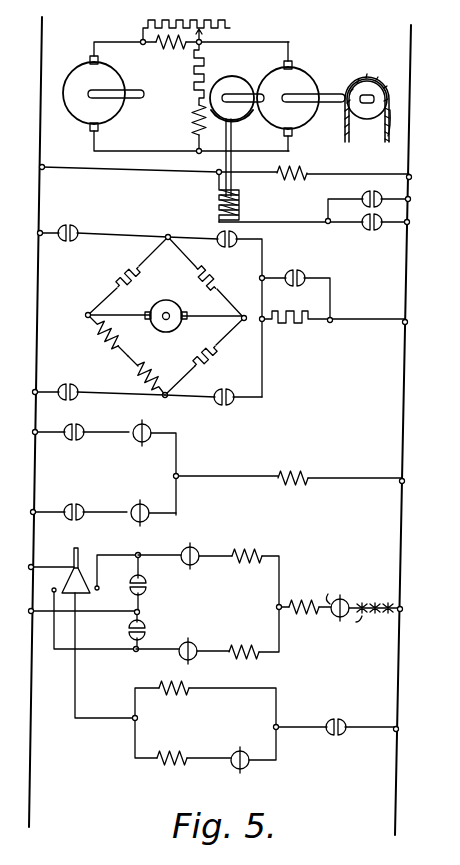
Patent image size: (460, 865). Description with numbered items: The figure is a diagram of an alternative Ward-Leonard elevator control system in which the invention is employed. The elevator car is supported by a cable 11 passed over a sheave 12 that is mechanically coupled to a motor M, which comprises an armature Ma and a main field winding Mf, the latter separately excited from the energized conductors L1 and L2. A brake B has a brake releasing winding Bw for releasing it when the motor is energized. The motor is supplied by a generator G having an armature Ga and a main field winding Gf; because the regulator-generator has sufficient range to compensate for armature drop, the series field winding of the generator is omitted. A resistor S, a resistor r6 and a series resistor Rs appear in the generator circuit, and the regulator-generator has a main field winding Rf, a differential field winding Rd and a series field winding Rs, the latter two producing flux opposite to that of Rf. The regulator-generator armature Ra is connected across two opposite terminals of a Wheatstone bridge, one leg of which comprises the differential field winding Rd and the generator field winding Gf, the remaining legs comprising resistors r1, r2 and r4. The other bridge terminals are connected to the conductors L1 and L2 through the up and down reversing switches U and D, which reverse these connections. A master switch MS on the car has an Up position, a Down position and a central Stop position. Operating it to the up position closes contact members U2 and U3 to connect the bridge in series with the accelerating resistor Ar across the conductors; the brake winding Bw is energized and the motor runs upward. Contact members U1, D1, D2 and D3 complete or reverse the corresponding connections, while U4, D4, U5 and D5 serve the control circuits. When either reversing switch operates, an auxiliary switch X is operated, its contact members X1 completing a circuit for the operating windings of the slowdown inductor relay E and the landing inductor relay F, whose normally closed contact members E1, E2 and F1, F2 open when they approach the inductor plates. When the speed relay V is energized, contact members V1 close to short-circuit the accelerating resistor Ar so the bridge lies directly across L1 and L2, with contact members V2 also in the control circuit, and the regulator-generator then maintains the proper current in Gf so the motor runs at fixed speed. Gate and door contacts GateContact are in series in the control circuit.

The energized conductor L1 is at (42, 156).
The energized conductor L2 is at (411, 156).
The generator G is at (141, 80).
The armature of the generator Ga is at (72, 72).
The series field winding of the regulator-generator Rs is at (172, 48).
The rheostat switch S is at (143, 20).
The resistor r6 is at (205, 66).
The main field winding of the regulator-generator Rf is at (193, 125).
The motor M is at (325, 54).
The armature of the motor Ma is at (318, 84).
The brake B is at (252, 140).
The brake releasing winding Bw is at (241, 202).
The sheave 12 is at (364, 82).
The cable 11 is at (388, 124).
The main field winding of the motor Mf is at (292, 172).
The contact members of up reversing switch U1 is at (378, 194).
The contact members of down reversing switch D1 is at (380, 217).
The contact members of up reversing switch U2 is at (84, 222).
The contact members of down reversing switch D2 is at (236, 234).
The armature of the regulator-generator Ra is at (191, 300).
The resistor r1 is at (114, 272).
The resistor r2 is at (214, 272).
The resistor r4 is at (224, 358).
The differential field winding of the regulator-generator Rd is at (98, 340).
The main field winding of the generator Gf is at (136, 379).
The contact members of speed relay V1 is at (318, 272).
The accelerating resistor Ar is at (290, 328).
The contact members of down reversing switch D3 is at (74, 386).
The contact members of up reversing switch U3 is at (242, 392).
The contact members of up reversing switch U4 is at (92, 420).
The contact members of slowdown inductor relay E1 is at (160, 418).
The contact members of down reversing switch D4 is at (84, 504).
The contact members of slowdown inductor relay E2 is at (160, 504).
The speed relay V is at (298, 472).
The master switch MS is at (66, 545).
The down position of master switch Down is at (52, 588).
The up position of master switch Up is at (116, 572).
The stop position of master switch Stop is at (79, 595).
The contact members of up reversing switch U5 is at (148, 584).
The contact members of down reversing switch D5 is at (144, 634).
The contact members of landing inductor relay F1 is at (210, 548).
The up reversing switch U is at (252, 546).
The contact members of landing inductor relay F2 is at (190, 644).
The down reversing switch D is at (244, 644).
The auxiliary switch X is at (298, 596).
The gate and door contacts GateContact is at (361, 606).
The slowdown inductor relay E is at (170, 678).
The landing inductor relay F is at (172, 758).
The contact members of speed relay V2 is at (262, 744).
The contact members of auxiliary switch X1 is at (352, 708).